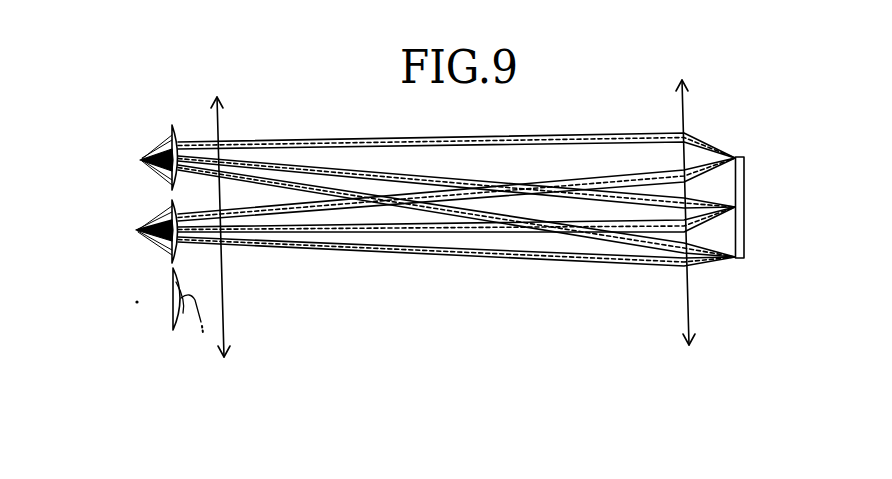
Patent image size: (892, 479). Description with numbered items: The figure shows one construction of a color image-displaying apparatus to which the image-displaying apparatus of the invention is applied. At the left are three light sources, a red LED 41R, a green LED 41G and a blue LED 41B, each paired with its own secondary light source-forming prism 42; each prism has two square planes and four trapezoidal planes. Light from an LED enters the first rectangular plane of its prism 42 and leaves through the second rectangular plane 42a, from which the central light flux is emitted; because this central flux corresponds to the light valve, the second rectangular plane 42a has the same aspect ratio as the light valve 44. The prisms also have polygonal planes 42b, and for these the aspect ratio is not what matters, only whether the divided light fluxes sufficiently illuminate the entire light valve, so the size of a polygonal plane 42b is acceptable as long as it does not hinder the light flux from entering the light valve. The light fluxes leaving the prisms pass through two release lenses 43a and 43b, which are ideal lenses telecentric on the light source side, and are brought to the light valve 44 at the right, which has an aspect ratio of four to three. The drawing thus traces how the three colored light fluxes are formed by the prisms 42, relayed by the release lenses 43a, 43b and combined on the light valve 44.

The red LED 41R is at (142, 159).
The green LED 41G is at (138, 231).
The blue LED 41B is at (138, 309).
The secondary light source-forming prism 42 is at (172, 126).
The second rectangular plane 42a is at (204, 338).
The polygonal plane 42b is at (183, 313).
The release lens 43a is at (221, 118).
The release lens 43b is at (680, 112).
The light valve 44 is at (744, 192).